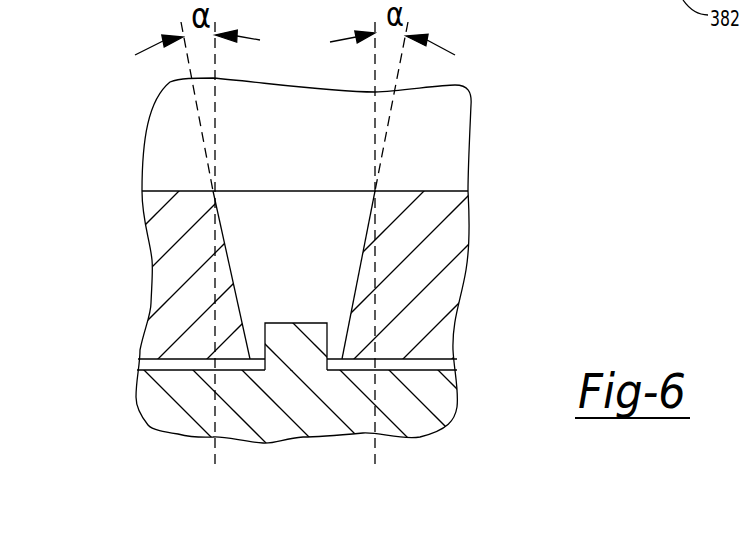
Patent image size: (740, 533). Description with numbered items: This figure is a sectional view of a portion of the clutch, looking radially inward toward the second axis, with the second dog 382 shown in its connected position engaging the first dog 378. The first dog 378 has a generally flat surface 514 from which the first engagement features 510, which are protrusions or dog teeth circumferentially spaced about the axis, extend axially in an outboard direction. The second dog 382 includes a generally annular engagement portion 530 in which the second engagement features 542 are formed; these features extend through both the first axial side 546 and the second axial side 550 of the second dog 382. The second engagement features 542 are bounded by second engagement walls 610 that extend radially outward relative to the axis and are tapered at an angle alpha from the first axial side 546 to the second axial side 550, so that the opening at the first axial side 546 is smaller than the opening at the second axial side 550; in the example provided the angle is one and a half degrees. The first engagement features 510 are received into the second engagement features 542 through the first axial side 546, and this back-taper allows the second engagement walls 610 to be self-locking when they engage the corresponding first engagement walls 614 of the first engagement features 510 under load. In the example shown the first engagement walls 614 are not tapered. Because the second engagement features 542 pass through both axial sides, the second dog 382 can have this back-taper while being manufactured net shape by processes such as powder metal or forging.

The first dog 378 is at (147, 390).
The second dog 382 is at (453, 283).
The first engagement features 510 is at (296, 345).
The surface 514 is at (400, 370).
The engagement portion 530 is at (453, 238).
The second engagement features 542 is at (300, 191).
The first axial side 546 is at (457, 368).
The second axial side 550 is at (444, 191).
The second engagement walls 610 is at (363, 255).
The first engagement walls 614 is at (325, 347).